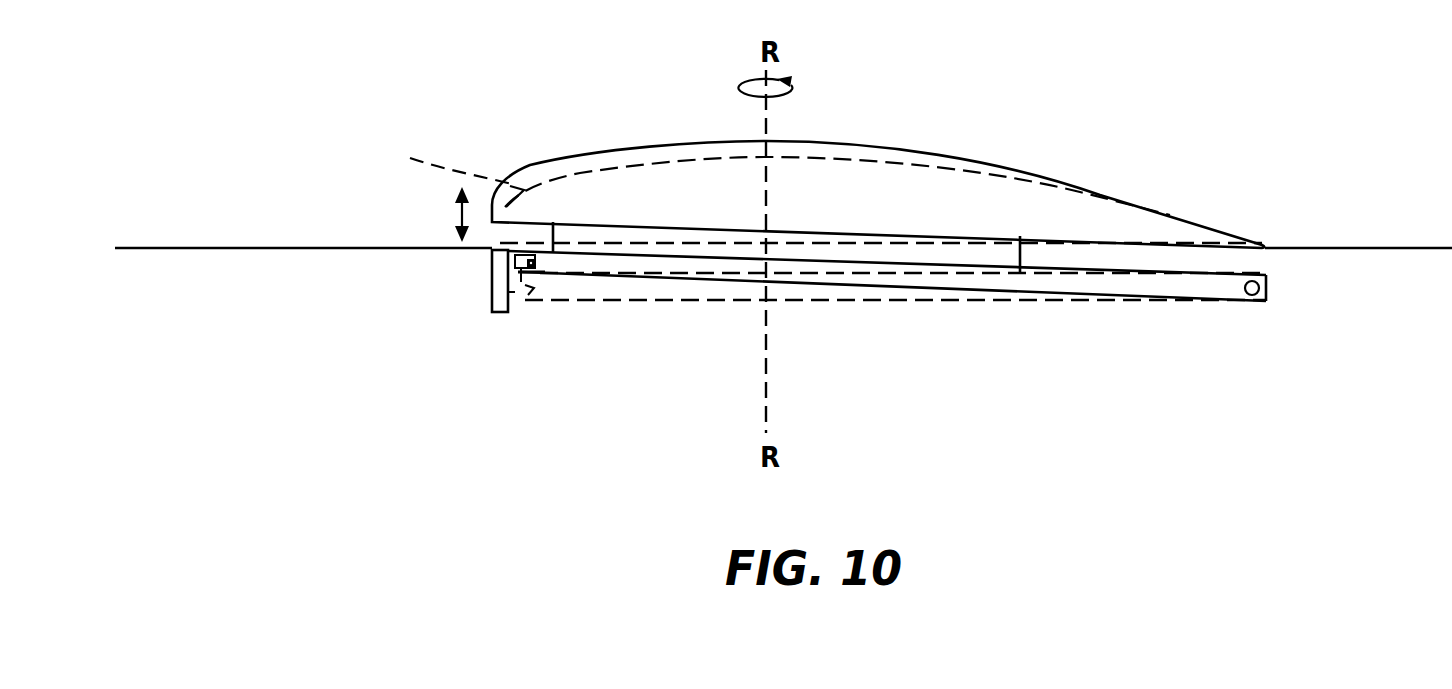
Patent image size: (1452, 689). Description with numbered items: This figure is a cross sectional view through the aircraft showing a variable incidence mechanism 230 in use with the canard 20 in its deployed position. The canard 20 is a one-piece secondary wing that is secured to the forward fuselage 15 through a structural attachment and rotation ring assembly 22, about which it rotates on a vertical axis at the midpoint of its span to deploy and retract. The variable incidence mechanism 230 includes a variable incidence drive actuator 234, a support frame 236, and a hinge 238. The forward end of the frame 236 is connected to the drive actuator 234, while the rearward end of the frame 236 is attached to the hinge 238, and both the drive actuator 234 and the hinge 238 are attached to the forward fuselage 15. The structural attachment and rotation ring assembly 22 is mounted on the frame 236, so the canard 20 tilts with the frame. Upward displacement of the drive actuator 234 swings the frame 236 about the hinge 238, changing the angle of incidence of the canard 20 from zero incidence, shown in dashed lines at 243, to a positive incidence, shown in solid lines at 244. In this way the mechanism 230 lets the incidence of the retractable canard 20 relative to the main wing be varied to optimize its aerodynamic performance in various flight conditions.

The forward fuselage 15 is at (156, 274).
The canard 20 is at (817, 142).
The structural attachment and rotation ring assembly 22 is at (827, 253).
The variable incidence mechanism 230 is at (846, 313).
The variable incidence drive actuator 234 is at (470, 306).
The support frame 236 is at (1154, 336).
The hinge 238 is at (1267, 288).
The zero incidence position 243 is at (447, 161).
The positive incidence position 244 is at (562, 157).